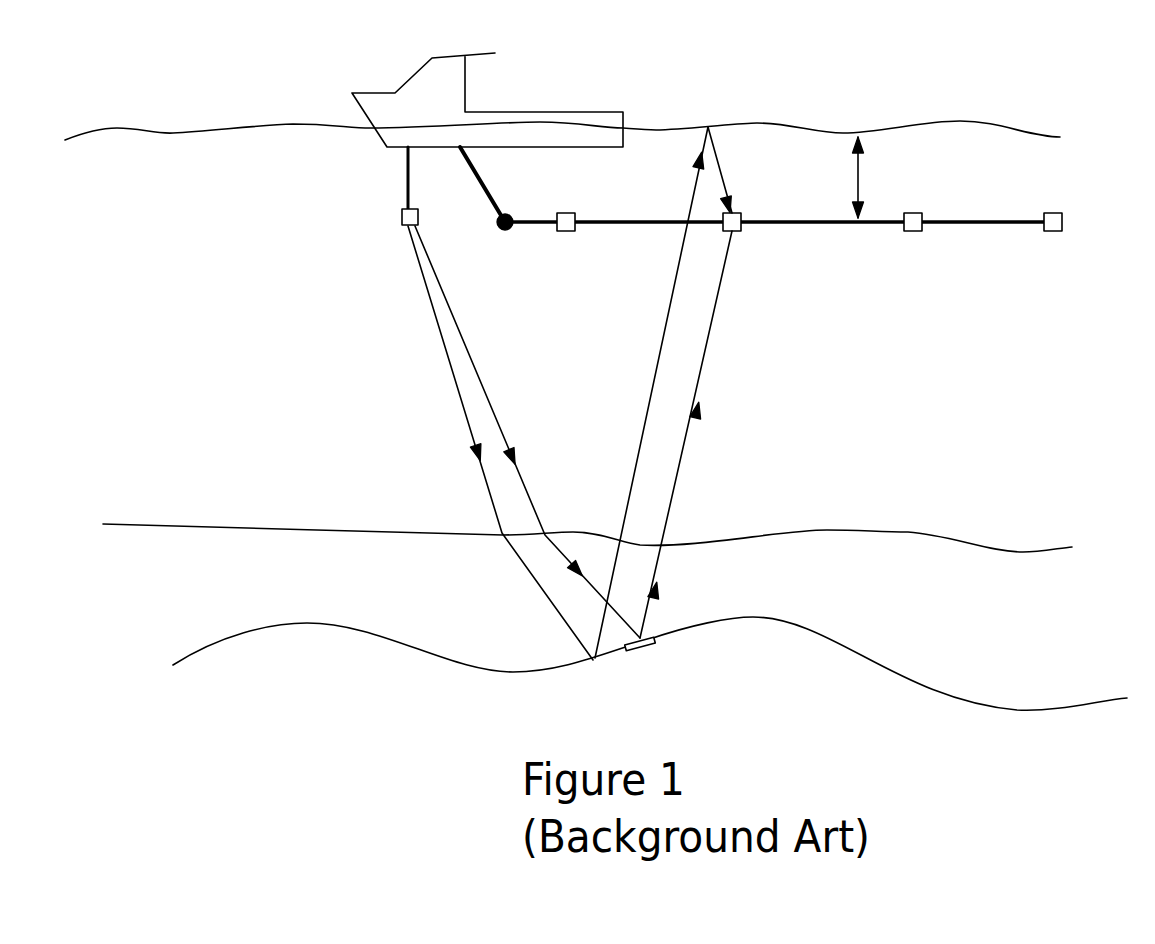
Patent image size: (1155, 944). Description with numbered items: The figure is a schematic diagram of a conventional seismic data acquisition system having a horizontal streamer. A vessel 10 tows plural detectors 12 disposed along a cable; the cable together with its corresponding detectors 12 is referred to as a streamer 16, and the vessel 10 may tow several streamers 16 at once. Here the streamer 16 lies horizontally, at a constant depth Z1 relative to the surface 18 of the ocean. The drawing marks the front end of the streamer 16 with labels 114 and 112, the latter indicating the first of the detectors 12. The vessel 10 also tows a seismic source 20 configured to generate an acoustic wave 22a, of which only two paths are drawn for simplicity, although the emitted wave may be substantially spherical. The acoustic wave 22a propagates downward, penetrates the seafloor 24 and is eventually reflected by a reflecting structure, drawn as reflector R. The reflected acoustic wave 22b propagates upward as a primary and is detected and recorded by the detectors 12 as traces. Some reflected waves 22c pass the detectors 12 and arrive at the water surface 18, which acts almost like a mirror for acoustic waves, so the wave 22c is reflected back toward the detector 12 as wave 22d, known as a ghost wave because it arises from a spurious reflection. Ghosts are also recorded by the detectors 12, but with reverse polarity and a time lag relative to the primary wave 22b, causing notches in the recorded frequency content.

The vessel 10 is at (412, 88).
The detectors 12 is at (737, 233).
The streamer 16 is at (761, 250).
The surface of the ocean 18 is at (757, 123).
The seismic source 20 is at (402, 213).
The acoustic wave 22a is at (475, 377).
The reflected acoustic wave 22b is at (685, 472).
The reflected waves passing detectors 22c is at (652, 405).
The ghost wave 22d is at (722, 163).
The seafloor 24 is at (908, 532).
The first receiver of streamer 112 is at (567, 232).
The lead-in / streamer head coupling 114 is at (542, 224).
The constant depth Z1 is at (860, 177).
The reflector R is at (640, 645).